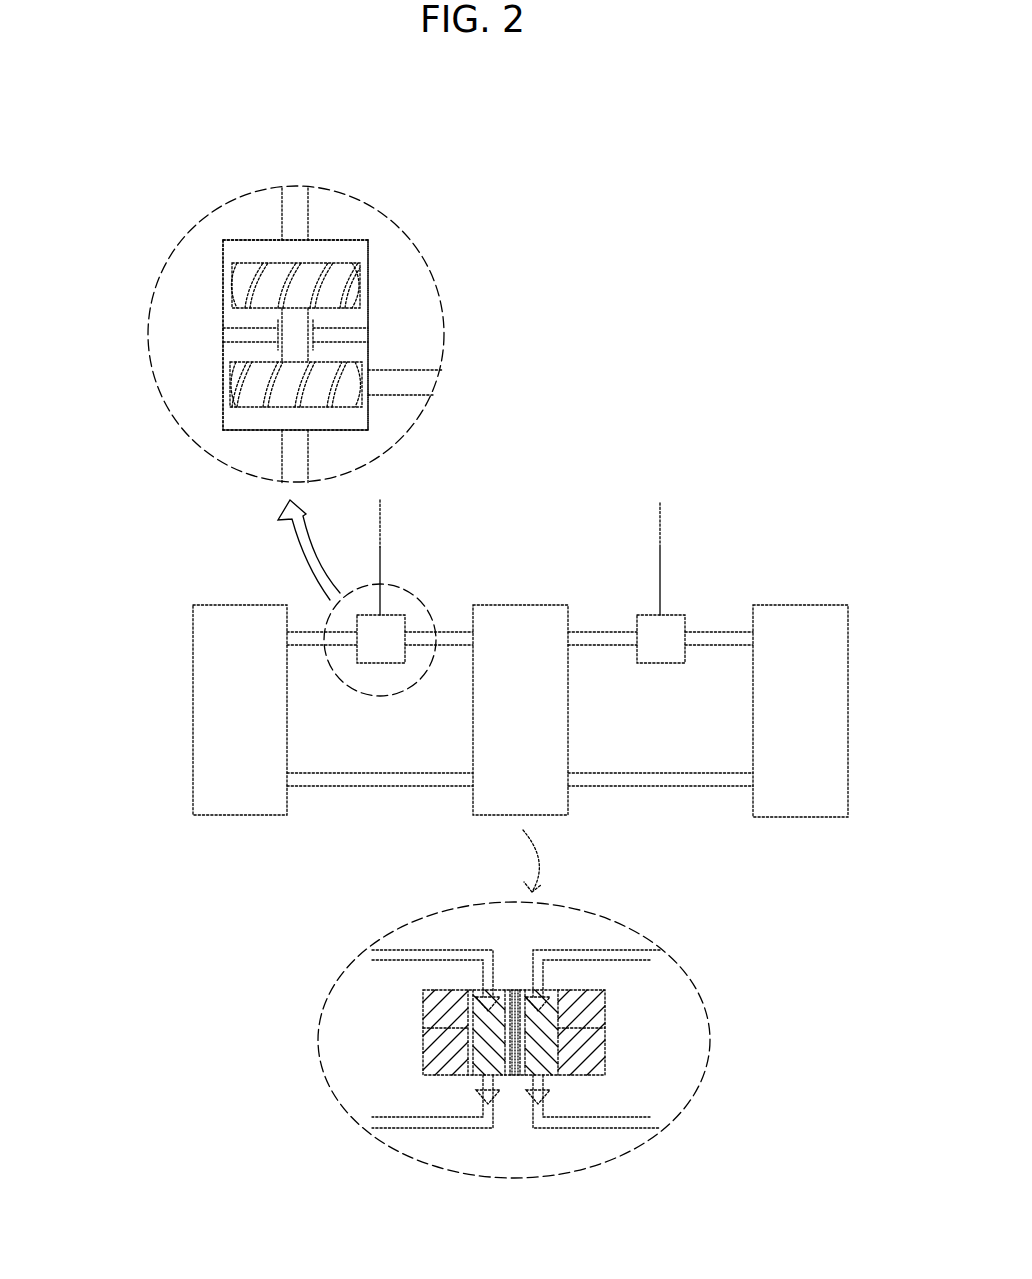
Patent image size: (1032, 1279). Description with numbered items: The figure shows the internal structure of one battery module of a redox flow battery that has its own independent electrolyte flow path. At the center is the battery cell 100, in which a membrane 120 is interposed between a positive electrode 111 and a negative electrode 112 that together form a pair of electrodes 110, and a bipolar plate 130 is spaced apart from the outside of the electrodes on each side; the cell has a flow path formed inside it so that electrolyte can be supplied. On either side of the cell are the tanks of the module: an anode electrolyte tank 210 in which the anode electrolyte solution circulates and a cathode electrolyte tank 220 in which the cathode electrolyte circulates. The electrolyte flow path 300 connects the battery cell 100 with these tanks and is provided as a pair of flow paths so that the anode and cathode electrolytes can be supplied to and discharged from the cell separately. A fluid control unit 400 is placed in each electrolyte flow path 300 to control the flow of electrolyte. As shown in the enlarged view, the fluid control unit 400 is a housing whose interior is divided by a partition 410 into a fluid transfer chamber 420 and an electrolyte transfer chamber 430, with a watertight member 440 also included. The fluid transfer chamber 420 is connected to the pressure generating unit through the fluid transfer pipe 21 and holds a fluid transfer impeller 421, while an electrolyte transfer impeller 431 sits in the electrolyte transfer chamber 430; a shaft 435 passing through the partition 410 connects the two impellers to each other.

The fluid transfer pipe 21 is at (296, 212).
The battery cell 100 is at (535, 605).
The pair of electrodes 110 is at (799, 1120).
The positive electrode 111 is at (483, 1028).
The negative electrode 112 is at (560, 1028).
The membrane 120 is at (514, 988).
The bipolar plate 130 is at (430, 1060).
The anode electrolyte tank 210 is at (237, 806).
The cathode electrolyte tank 220 is at (805, 806).
The electrolyte flow path 300 is at (287, 460).
The fluid control unit 400 is at (393, 612).
The partition 410 is at (345, 325).
The fluid transfer chamber 420 is at (356, 245).
The fluid transfer impeller 421 is at (247, 278).
The electrolyte transfer chamber 430 is at (352, 348).
The electrolyte transfer impeller 431 is at (232, 400).
The shaft 435 is at (255, 315).
The watertight member 440 is at (258, 345).